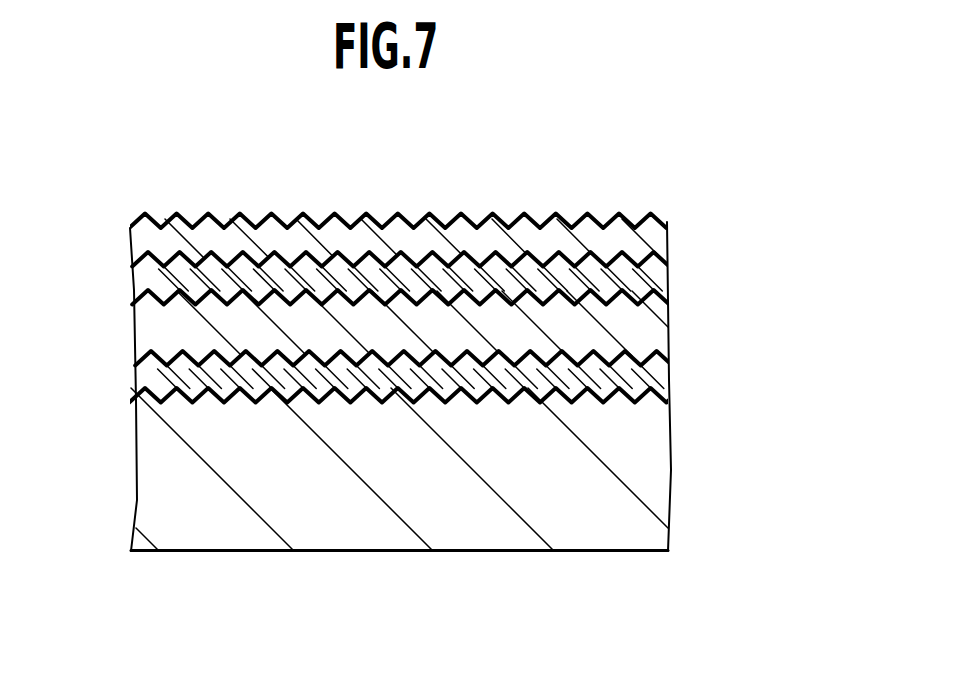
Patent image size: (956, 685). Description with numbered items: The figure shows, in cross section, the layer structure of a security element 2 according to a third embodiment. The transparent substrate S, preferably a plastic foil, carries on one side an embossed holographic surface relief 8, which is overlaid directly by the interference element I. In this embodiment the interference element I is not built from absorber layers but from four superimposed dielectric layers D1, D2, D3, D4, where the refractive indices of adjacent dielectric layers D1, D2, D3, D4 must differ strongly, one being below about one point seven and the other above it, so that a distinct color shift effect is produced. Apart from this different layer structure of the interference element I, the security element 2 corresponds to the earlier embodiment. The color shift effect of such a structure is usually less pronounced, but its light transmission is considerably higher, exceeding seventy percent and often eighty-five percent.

The security element 2 is at (108, 197).
The embossed holographic surface relief 8 is at (177, 393).
The dielectric layer D1 is at (660, 240).
The dielectric layer D2 is at (655, 281).
The dielectric layer D3 is at (650, 320).
The dielectric layer D4 is at (650, 367).
The interference element I is at (803, 212).
The transparent substrate S is at (652, 473).